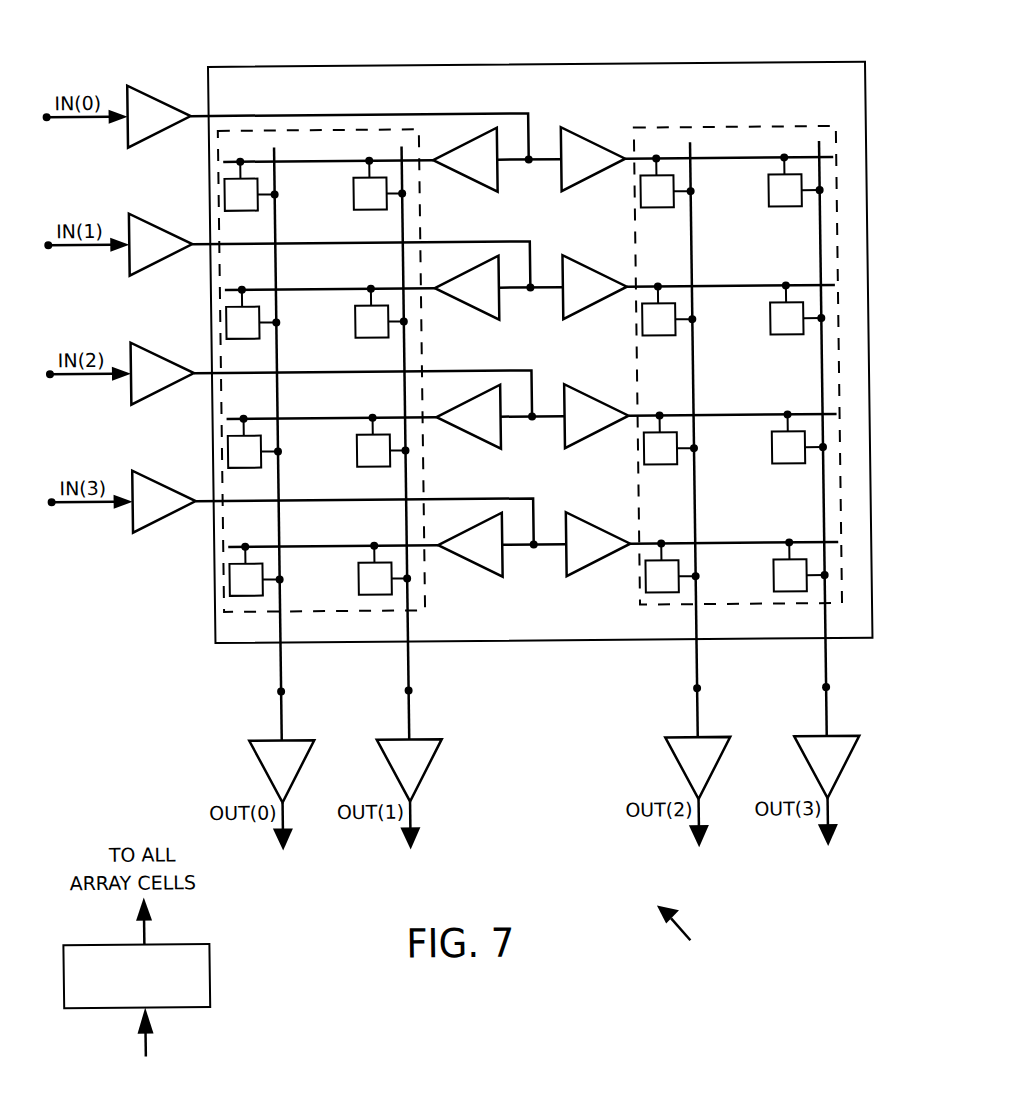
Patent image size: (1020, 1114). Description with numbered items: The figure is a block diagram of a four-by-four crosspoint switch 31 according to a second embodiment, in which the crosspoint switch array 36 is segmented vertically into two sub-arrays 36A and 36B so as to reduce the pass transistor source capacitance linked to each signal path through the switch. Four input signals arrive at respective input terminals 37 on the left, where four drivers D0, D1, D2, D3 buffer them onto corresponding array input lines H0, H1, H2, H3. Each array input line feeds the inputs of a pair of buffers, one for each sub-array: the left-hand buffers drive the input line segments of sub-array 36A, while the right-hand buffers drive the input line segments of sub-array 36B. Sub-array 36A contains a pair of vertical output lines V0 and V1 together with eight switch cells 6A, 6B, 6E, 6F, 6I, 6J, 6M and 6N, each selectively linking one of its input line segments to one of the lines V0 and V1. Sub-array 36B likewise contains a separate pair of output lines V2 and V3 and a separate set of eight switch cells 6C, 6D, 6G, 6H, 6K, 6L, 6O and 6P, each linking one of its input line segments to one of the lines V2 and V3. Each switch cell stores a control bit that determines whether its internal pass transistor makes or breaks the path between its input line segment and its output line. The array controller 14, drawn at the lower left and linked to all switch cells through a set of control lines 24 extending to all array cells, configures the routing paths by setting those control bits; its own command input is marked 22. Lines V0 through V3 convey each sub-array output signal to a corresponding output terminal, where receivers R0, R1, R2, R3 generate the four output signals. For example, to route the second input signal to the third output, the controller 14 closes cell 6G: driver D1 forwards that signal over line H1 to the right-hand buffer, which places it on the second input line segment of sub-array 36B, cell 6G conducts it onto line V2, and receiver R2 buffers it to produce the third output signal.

The crosspoint switch array 36 is at (754, 67).
The switch sub-array 36A is at (321, 612).
The switch sub-array 36B is at (723, 608).
The input terminal 37 is at (48, 119).
The array controller 14 is at (136, 976).
The control lines 24 is at (132, 927).
The controller input 22 is at (129, 1040).
The crosspoint switch 31 is at (687, 930).
The switch cell 6A is at (251, 183).
The switch cell 6B is at (379, 182).
The switch cell 6C is at (667, 180).
The switch cell 6D is at (796, 179).
The switch cell 6E is at (253, 311).
The switch cell 6F is at (381, 310).
The switch cell 6G is at (669, 308).
The switch cell 6H is at (798, 307).
The switch cell 6I is at (255, 440).
The switch cell 6J is at (383, 439).
The switch cell 6K is at (671, 437).
The switch cell 6L is at (800, 436).
The switch cell 6M is at (256, 568).
The switch cell 6N is at (384, 567).
The switch cell 6O is at (672, 565).
The switch cell 6P is at (801, 564).
The driver D0 is at (159, 116).
The driver D1 is at (161, 244).
The driver D2 is at (163, 373).
The driver D3 is at (164, 501).
The receiver R0 is at (282, 771).
The receiver R1 is at (410, 770).
The receiver R2 is at (698, 768).
The receiver R3 is at (827, 767).
The array input line H0 is at (497, 116).
The array input line H1 is at (497, 244).
The array input line H2 is at (497, 373).
The array input line H3 is at (497, 501).
The output line V0 is at (272, 661).
The output line V1 is at (400, 661).
The output line V2 is at (688, 661).
The output line V3 is at (817, 661).